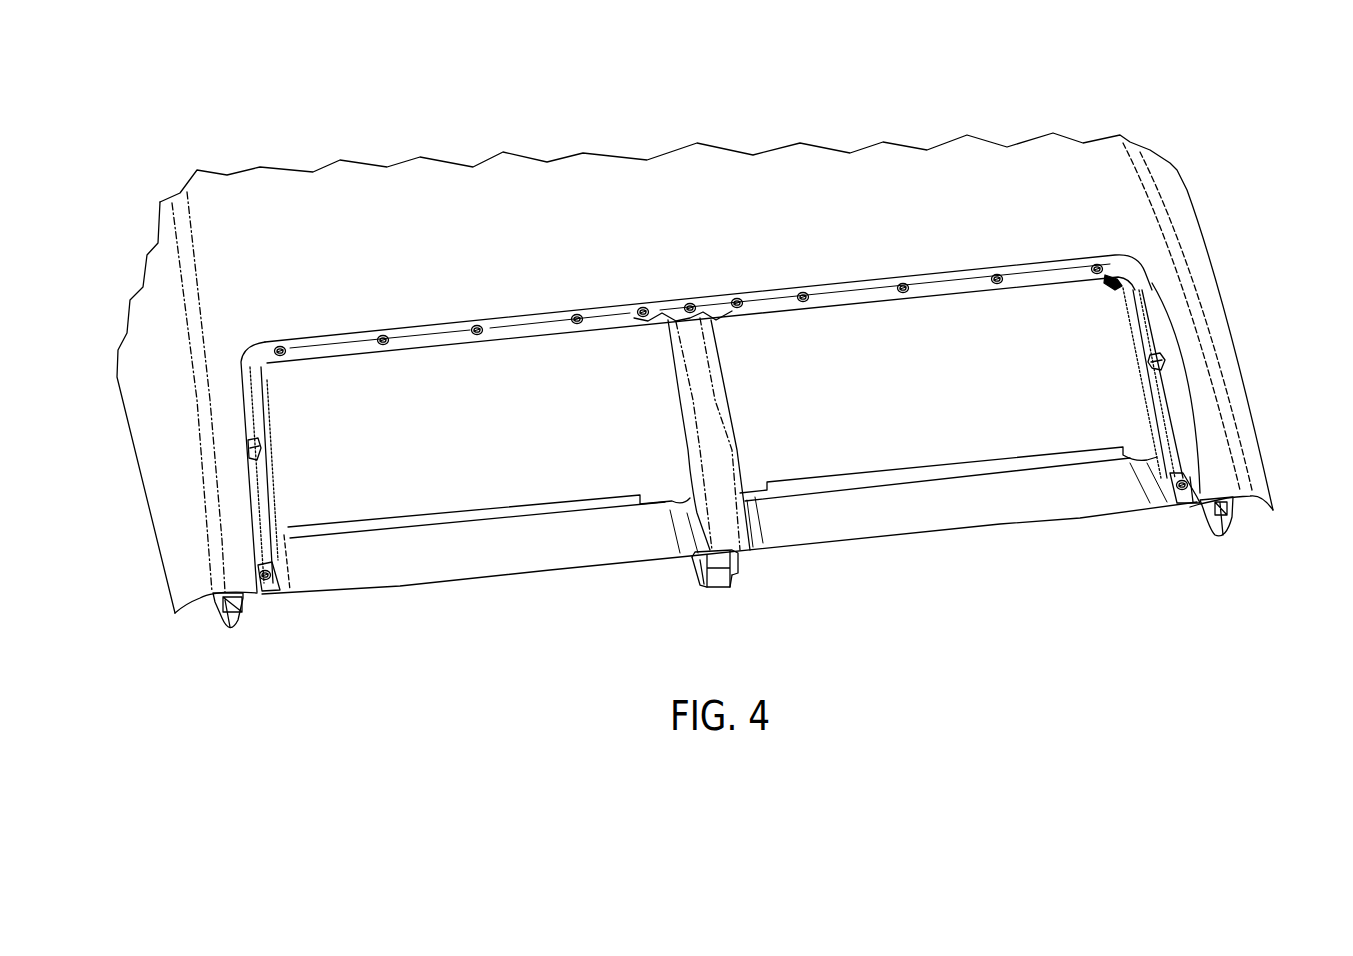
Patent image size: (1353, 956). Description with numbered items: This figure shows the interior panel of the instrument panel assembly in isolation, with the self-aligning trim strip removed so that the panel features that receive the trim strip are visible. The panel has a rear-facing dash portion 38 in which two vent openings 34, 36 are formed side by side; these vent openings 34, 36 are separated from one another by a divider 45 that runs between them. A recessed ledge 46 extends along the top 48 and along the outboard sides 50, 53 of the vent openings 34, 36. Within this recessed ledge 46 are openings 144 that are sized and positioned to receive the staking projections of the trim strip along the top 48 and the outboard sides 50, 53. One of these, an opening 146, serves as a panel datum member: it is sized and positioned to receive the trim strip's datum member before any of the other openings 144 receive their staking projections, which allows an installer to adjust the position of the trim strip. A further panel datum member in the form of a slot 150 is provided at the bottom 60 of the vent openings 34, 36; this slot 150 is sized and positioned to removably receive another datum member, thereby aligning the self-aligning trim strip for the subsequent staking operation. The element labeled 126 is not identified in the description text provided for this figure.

The trim panel 126 is at (916, 112).
The vent opening 34 is at (427, 362).
The vent opening 36 is at (1030, 312).
The rear-facing dash portion 38 is at (1273, 378).
The divider 45 is at (712, 398).
The recessed ledge 46 is at (590, 318).
The top 48 is at (816, 290).
The outboard side 50 is at (243, 405).
The outboard side 53 is at (1160, 320).
The bottom 60 is at (577, 558).
The openings 144 is at (903, 283).
The opening 146 is at (643, 306).
The slot 150 is at (742, 548).